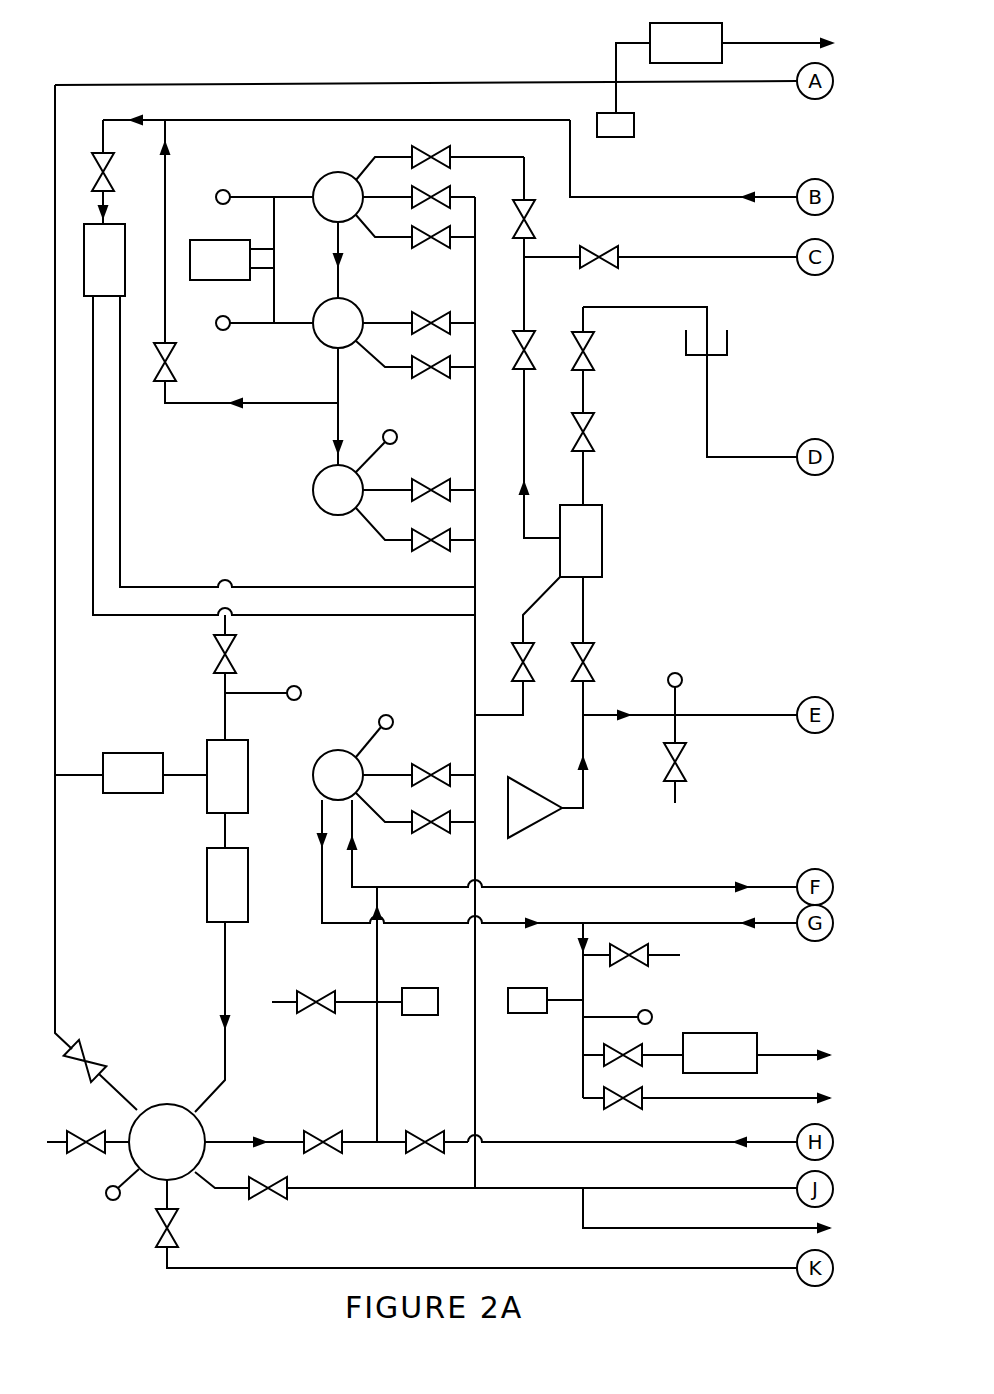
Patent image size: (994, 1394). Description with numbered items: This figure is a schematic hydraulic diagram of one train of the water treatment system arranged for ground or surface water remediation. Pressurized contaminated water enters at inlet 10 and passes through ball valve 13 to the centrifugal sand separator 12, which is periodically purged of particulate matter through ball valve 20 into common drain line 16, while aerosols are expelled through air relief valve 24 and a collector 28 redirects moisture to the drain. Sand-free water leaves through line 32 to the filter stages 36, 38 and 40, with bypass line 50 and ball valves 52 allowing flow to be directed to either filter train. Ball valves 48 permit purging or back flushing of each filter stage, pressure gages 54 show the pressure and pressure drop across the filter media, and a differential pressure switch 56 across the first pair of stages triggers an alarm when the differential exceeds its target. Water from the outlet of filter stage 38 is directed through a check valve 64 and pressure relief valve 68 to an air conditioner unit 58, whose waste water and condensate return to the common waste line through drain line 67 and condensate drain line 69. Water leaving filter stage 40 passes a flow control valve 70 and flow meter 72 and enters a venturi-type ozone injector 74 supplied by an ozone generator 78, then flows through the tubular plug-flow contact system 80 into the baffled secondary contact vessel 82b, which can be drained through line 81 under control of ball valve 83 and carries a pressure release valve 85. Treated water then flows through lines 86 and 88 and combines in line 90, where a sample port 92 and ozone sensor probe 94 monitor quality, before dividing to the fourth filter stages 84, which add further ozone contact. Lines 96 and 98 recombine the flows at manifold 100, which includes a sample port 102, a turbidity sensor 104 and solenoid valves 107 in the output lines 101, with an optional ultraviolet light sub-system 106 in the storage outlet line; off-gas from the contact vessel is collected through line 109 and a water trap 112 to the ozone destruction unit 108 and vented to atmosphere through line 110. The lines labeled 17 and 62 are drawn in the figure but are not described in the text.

The inlet 10 is at (540, 788).
The first centrifugal sand separator 12 is at (602, 528).
The ball valve 13 is at (592, 648).
The common drain line 16 is at (470, 668).
The outlet line 17 is at (598, 712).
The ball valve 20 is at (592, 425).
The air relief valve 24 is at (592, 338).
The collector 28 is at (727, 347).
The line 32 is at (521, 257).
The filter stage 36 is at (330, 172).
The filter stage 38 is at (328, 350).
The filter stage 40 is at (320, 470).
The ball valve 48 is at (452, 190).
The bypass line 50 is at (700, 257).
The ball valve 52 is at (530, 214).
The pressure gage 54 is at (225, 190).
The differential pressure switch 56 is at (213, 240).
The air conditioner unit 58 is at (126, 236).
The line 62 is at (636, 197).
The check valve 64 is at (452, 152).
The air conditioner drain line 67 is at (115, 625).
The pressure relief valve 68 is at (115, 188).
The condensate drain line 69 is at (120, 483).
The flow control valve 70 is at (238, 668).
The flow meter 72 is at (299, 687).
The venturi-type ozone injector 74 is at (248, 758).
The ozone generator 78 is at (110, 795).
The plug-flow contact system 80 is at (248, 870).
The line 81 is at (413, 1188).
The secondary contact vessel 82b is at (158, 1104).
The ball valve 83 is at (255, 1198).
The fourth filter stage 84 is at (313, 770).
The pressure release valve 85 is at (70, 1132).
The line 86 is at (236, 1142).
The line 88 is at (560, 1142).
The line 90 is at (378, 1065).
The sample port 92 is at (332, 990).
The ozone sensor probe 94 is at (414, 988).
The line 96 is at (346, 926).
The line 98 is at (618, 922).
The manifold 100 is at (582, 1040).
The output line 101 is at (815, 1064).
The sample port 102 is at (645, 948).
The turbidity sensor 104 is at (515, 986).
The ultra-violet light sub-system 106 is at (757, 1034).
The solenoid valve 107 is at (608, 1066).
The off-gas ozone destruction unit 108 is at (655, 25).
The line 109 is at (56, 715).
The line 110 is at (815, 38).
The water trap 112 is at (634, 121).